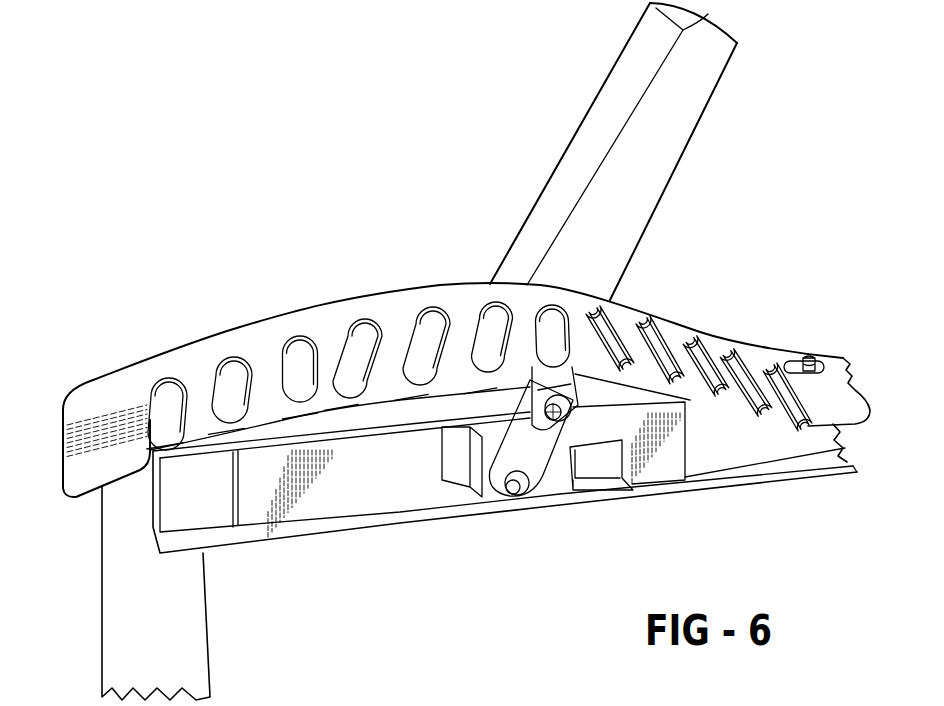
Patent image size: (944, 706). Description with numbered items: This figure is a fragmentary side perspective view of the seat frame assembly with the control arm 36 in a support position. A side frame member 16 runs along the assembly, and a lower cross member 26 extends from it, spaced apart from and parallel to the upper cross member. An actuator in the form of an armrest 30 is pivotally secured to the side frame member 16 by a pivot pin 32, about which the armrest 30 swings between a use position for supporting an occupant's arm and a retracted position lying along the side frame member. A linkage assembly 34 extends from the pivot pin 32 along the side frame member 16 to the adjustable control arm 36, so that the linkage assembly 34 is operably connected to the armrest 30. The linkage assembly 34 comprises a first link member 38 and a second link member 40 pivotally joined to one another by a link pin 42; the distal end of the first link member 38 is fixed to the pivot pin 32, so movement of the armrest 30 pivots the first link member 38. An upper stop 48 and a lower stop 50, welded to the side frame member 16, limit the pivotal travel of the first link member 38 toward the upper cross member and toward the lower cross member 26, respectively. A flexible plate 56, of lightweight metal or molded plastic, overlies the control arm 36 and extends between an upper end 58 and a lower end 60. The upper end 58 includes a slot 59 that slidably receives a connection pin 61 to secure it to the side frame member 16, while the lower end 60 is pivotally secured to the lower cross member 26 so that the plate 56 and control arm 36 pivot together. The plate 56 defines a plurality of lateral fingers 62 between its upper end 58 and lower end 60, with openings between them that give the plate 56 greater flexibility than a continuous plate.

The side frame member 16 is at (333, 530).
The lower cross member 26 is at (195, 583).
The armrest 30 is at (560, 183).
The pivot pin 32 is at (533, 503).
The linkage assembly 34 is at (580, 418).
The control arm 36 is at (372, 357).
The first link member 38 is at (495, 493).
The second link member 40 is at (570, 378).
The link pin 42 is at (528, 408).
The upper stop 48 is at (600, 480).
The lower stop 50 is at (460, 468).
The plate 56 is at (307, 303).
The upper end 58 is at (837, 370).
The slot 59 is at (790, 360).
The lower end 60 is at (72, 385).
The connection pin 61 is at (810, 357).
The lateral fingers 62 is at (340, 423).